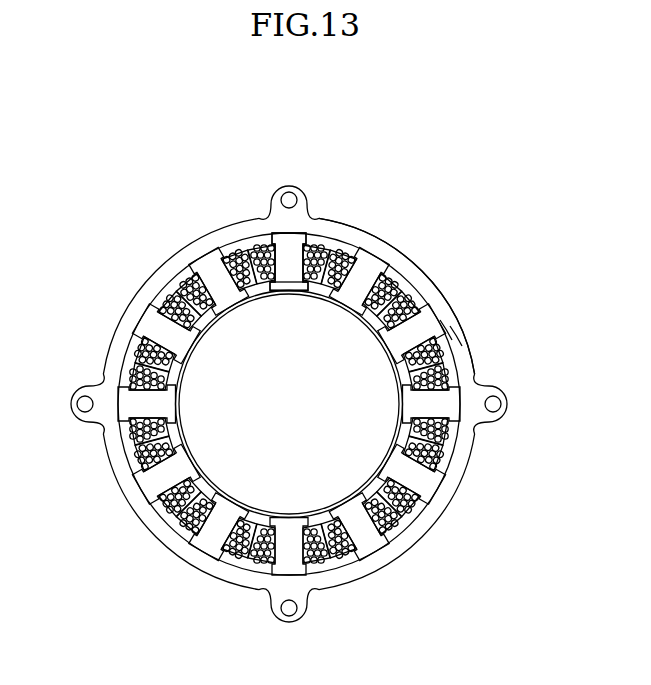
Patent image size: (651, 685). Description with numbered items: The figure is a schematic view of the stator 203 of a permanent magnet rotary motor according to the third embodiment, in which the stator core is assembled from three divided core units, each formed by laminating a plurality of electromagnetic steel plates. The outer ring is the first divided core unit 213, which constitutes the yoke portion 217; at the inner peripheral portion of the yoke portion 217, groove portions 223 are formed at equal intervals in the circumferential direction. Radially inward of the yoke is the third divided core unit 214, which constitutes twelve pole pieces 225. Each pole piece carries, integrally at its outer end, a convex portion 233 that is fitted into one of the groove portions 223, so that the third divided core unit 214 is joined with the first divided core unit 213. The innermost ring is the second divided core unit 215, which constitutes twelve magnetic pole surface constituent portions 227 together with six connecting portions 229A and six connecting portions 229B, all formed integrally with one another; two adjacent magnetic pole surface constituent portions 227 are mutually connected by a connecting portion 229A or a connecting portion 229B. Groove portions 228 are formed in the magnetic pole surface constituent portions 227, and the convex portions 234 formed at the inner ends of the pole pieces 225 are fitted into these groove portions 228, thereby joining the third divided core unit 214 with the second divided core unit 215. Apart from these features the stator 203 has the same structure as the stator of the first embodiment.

The stator 203 is at (440, 277).
The first divided core unit 213 is at (440, 320).
The third divided core unit 214 is at (280, 246).
The second divided core unit 215 is at (452, 310).
The yoke portion 217 is at (455, 332).
The groove portions 223 is at (308, 205).
The pole pieces 225 is at (207, 270).
The magnetic pole surface constituent portions 227 is at (293, 300).
The groove portions 228 is at (297, 282).
The connecting portion 229A is at (261, 301).
The connecting portion 229B is at (187, 432).
The convex portions 233 is at (277, 193).
The convex portions 234 is at (288, 282).